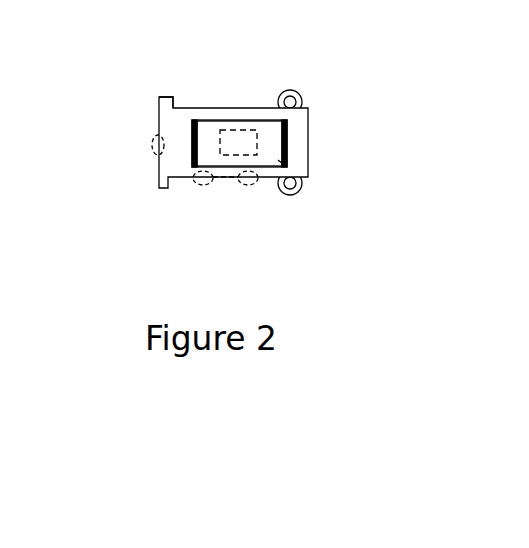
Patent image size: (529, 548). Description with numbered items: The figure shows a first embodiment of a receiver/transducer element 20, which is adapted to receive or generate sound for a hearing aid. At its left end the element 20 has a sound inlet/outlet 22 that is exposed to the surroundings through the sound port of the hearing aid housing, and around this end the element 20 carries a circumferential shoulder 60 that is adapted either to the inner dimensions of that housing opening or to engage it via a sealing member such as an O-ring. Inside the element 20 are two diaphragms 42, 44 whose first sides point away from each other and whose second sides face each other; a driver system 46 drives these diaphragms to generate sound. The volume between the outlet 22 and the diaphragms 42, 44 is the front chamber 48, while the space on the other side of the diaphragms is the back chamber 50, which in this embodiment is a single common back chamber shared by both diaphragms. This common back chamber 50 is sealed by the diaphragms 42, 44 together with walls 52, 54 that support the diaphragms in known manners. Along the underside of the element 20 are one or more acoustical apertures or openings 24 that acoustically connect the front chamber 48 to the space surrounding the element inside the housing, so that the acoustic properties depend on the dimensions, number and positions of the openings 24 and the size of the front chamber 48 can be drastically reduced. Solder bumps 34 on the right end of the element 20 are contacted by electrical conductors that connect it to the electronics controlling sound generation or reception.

The transducer element 20 is at (246, 140).
The sound inlet/outlet 22 is at (142, 144).
The acoustical apertures 24 is at (243, 190).
The solder bumps 34 is at (304, 107).
The first diaphragm 42 is at (291, 140).
The second diaphragm 44 is at (267, 170).
The driver system 46 is at (234, 142).
The front chamber 48 is at (170, 110).
The back chamber 50 is at (210, 128).
The first wall 52 is at (188, 168).
The second wall 54 is at (292, 143).
The circumferential shoulder 60 is at (156, 96).